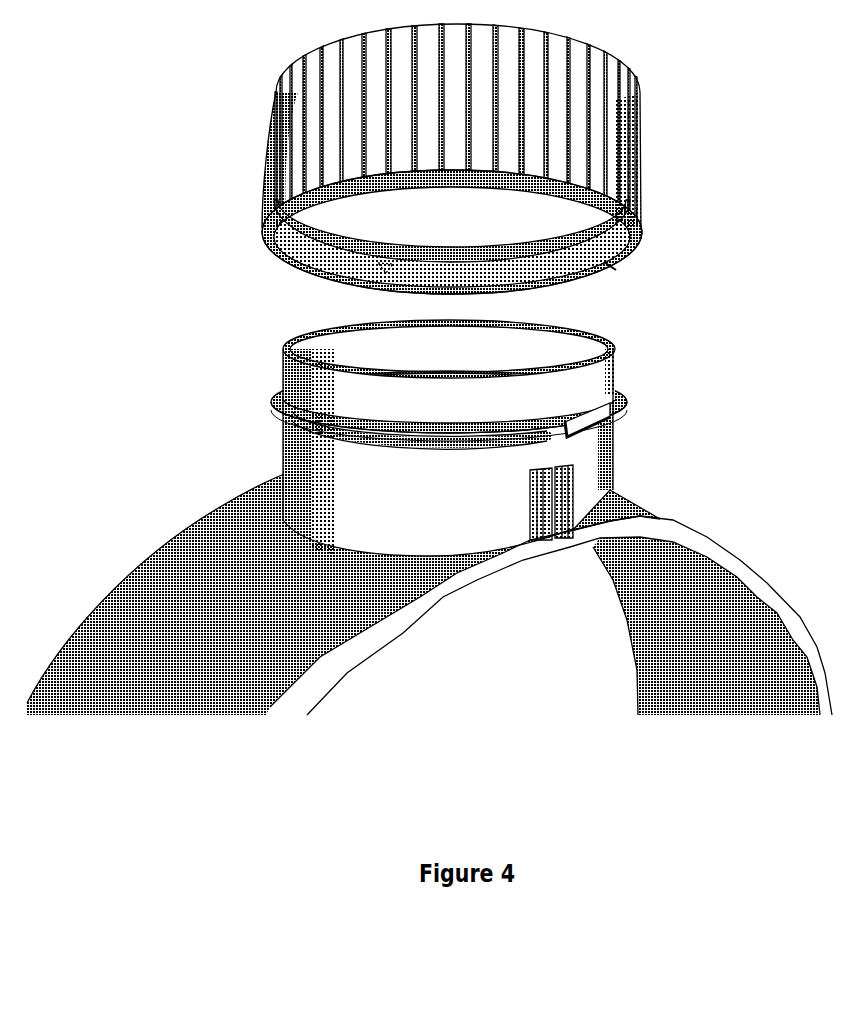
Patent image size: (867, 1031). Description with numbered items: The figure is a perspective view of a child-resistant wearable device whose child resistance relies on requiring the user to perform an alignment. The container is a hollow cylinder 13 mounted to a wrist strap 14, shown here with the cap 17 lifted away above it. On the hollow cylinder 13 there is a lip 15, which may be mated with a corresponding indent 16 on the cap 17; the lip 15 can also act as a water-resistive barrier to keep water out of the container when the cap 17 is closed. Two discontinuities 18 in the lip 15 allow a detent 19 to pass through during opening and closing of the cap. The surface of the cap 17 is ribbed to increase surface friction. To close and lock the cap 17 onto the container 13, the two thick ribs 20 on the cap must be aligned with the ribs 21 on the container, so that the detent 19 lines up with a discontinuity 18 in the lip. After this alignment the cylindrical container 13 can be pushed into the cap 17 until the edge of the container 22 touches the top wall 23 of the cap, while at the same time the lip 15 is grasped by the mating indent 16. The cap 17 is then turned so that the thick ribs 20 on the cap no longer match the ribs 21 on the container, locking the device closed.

The hollow cylinder 13 is at (280, 458).
The wrist strap 14 is at (237, 513).
The lip 15 is at (273, 393).
The indent 16 is at (300, 265).
The cap 17 is at (557, 147).
The discontinuities 18 is at (563, 423).
The detent 19 is at (383, 273).
The thick ribs 20 is at (637, 232).
The ribs 21 is at (573, 520).
The edge of the container 22 is at (282, 348).
The top wall 23 is at (520, 183).